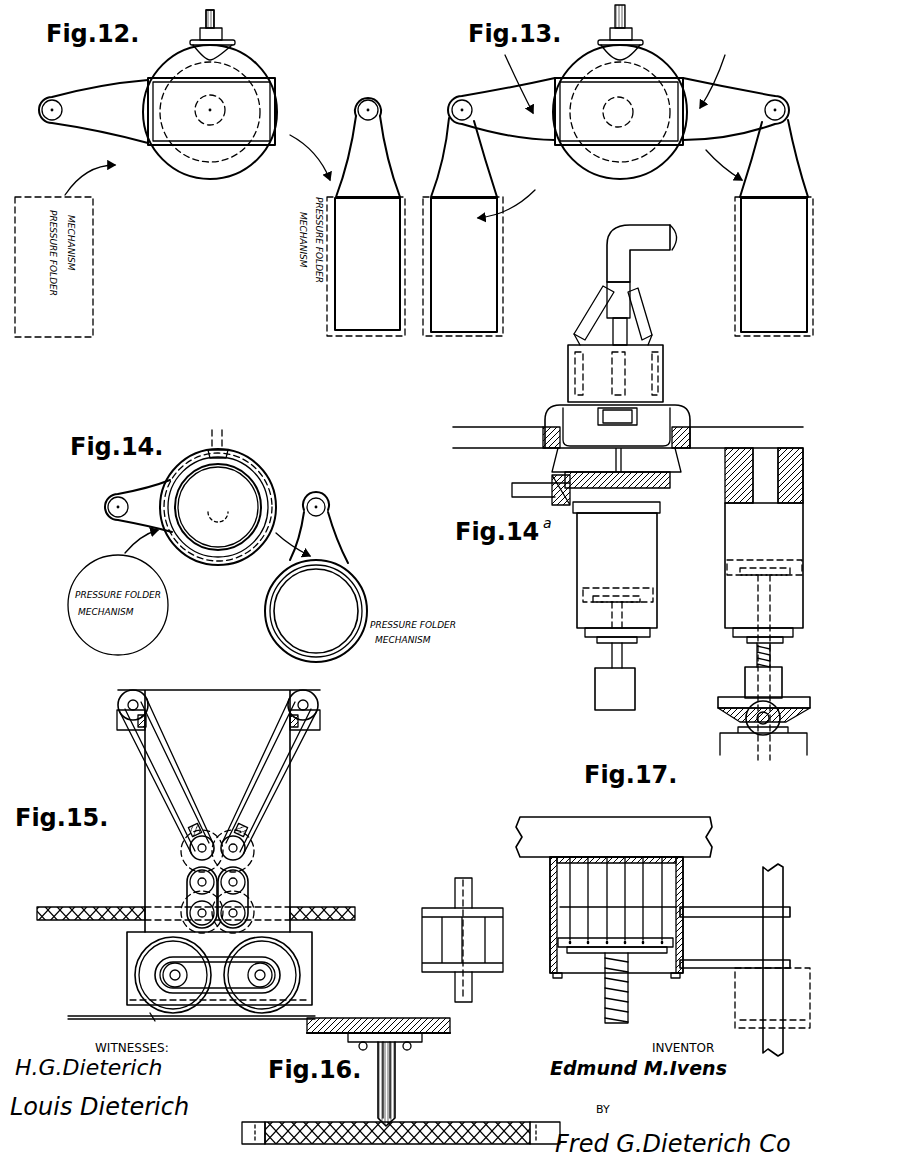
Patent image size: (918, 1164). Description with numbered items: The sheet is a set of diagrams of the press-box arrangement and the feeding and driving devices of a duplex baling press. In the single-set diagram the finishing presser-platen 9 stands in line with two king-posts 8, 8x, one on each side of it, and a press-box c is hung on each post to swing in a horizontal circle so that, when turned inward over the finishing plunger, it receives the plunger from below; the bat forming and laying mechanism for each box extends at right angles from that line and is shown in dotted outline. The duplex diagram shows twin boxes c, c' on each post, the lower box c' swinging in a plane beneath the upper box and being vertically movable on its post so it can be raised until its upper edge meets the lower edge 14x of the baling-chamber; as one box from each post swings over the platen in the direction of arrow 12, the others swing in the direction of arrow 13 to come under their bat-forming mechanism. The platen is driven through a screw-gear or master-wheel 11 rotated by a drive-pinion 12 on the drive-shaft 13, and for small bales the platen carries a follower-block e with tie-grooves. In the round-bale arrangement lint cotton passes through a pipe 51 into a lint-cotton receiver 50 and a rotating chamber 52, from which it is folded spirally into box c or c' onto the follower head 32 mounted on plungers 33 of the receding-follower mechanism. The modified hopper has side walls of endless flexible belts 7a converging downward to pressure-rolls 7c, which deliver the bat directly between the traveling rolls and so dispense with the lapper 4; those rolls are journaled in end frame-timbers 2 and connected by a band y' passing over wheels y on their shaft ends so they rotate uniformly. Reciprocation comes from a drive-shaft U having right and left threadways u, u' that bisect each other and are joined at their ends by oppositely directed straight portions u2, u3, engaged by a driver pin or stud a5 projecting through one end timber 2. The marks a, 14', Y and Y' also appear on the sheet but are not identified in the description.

In FIG. 12, the king-post 8x is at (66, 112).
In FIG. 13, the king-post 8x is at (501, 109).
In FIG. 14, the king-post 8x is at (106, 508).
In FIG. 17, the king-post 8x is at (458, 900).
In FIG. 12, the king-post 8 is at (365, 103).
In FIG. 13, the king-post 8 is at (775, 100).
In FIG. 14, the king-post 8 is at (316, 497).
In FIG. 17, the king-post 8 is at (760, 930).
In FIG. 12, the finishing presser-platen 9 is at (211, 111).
In FIG. 13, the finishing presser-platen 9 is at (619, 111).
In FIG. 14, the finishing presser-platen 9 is at (218, 507).
In FIG. 12, the screw-gear or master-wheel 11 is at (255, 60).
In FIG. 13, the screw-gear or master-wheel 11 is at (668, 72).
In FIG. 12, the drive-pinion 12 is at (228, 43).
In FIG. 13, the drive-pinion 12 is at (640, 45).
In FIG. 14a, the drive-pinion 12 is at (748, 718).
In FIG. 14, the drive-pinion 12 is at (228, 452).
In FIG. 12, the drive-shaft 13 is at (205, 20).
In FIG. 13, the drive-shaft 13 is at (625, 14).
In FIG. 14, the drive-shaft 13 is at (270, 472).
In FIG. 12, the press-box c is at (101, 161).
In FIG. 13, the press-box c is at (535, 227).
In FIG. 14a, the press-box c is at (617, 570).
In FIG. 14, the press-box c is at (141, 515).
In FIG. 17, the press-box c is at (477, 940).
In FIG. 12, the lowermost press-box c' is at (347, 226).
In FIG. 13, the lowermost press-box c' is at (764, 219).
In FIG. 14a, the lowermost press-box c' is at (764, 631).
In FIG. 17, the lowermost press-box c' is at (761, 998).
In FIG. 14a, the pipe 51 is at (638, 248).
In FIG. 14a, the lint-cotton receiver 50 is at (643, 370).
In FIG. 14a, the rotating chamber 52 is at (590, 457).
In FIG. 14a, the bracket a is at (541, 499).
In FIG. 14a, the head 32 is at (650, 596).
In FIG. 14a, the plunger 33 is at (620, 668).
In FIG. 17, the plunger 33 is at (628, 996).
In FIG. 14a, the table plate 14' is at (764, 488).
In FIG. 17, the table plate 14' is at (614, 837).
In FIG. 17, the lower edge of baling-chamber 14x is at (683, 905).
In FIG. 14a, the lapper 4 is at (780, 708).
In FIG. 15, the endless flexible belts 7a is at (152, 772).
In FIG. 15, the pressure-rolls 7c is at (250, 900).
In FIG. 15, the drive-shaft U is at (196, 900).
In FIG. 16, the drive-shaft U is at (436, 1121).
In FIG. 15, the right threadway u is at (50, 932).
In FIG. 16, the right threadway u is at (471, 1108).
In FIG. 15, the left threadway u' is at (81, 932).
In FIG. 16, the left threadway u' is at (500, 1108).
In FIG. 16, the straight portion u2 is at (262, 1122).
In FIG. 16, the straight portion u3 is at (548, 1121).
In FIG. 15, the wheel y is at (217, 975).
In FIG. 15, the band y' is at (217, 976).
In FIG. 15, the base rail Y is at (191, 1009).
In FIG. 15, the base rail Y' is at (324, 1008).
In FIG. 15, the end frame-timber 2 is at (240, 956).
In FIG. 16, the end frame-timber 2 is at (378, 1016).
In FIG. 16, the driver pin or stud a5 is at (393, 1105).
In FIG. 17, the follower-block e is at (575, 942).